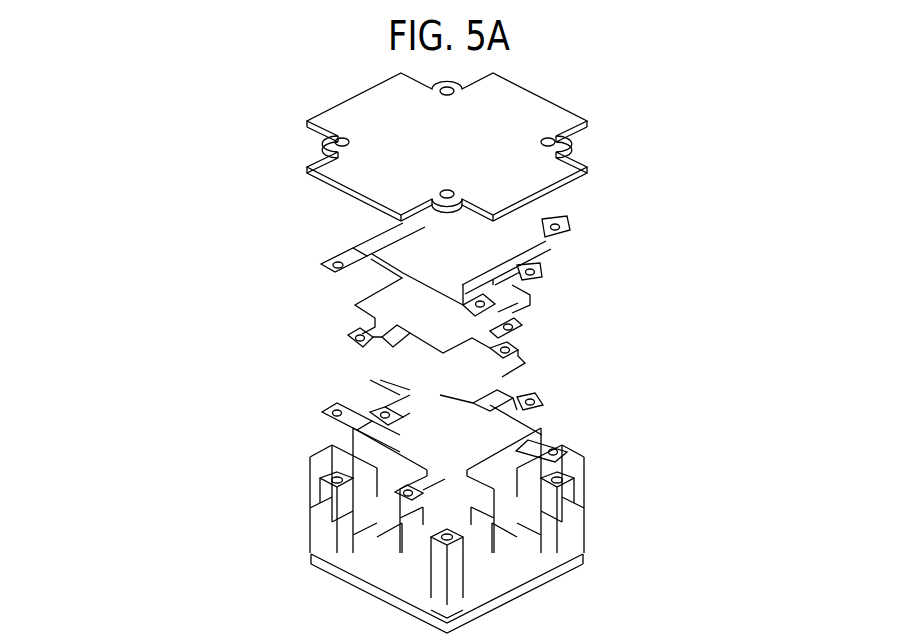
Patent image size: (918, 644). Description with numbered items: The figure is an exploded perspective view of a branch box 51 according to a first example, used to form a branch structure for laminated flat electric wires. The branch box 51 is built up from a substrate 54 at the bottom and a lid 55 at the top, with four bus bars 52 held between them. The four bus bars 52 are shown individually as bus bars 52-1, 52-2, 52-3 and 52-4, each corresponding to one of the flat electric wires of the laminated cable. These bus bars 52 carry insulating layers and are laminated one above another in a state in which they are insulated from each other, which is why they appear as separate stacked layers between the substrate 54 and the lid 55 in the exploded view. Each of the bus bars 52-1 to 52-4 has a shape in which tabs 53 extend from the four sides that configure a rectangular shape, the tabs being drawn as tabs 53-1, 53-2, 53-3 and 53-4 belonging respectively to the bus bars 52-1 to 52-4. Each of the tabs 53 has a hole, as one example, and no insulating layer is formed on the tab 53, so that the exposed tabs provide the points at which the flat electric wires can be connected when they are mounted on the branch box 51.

The branch box 51 is at (211, 164).
The bus bars 52 is at (752, 200).
The bus bar 52-1 is at (503, 224).
The bus bar 52-2 is at (540, 291).
The bus bar 52-3 is at (520, 378).
The bus bar 52-4 is at (505, 437).
The tabs 53 is at (97, 232).
The tab 53-1 is at (352, 258).
The tab 53-2 is at (355, 323).
The tab 53-3 is at (370, 403).
The tab 53-4 is at (330, 414).
The substrate 54 is at (580, 563).
The lid 55 is at (577, 121).